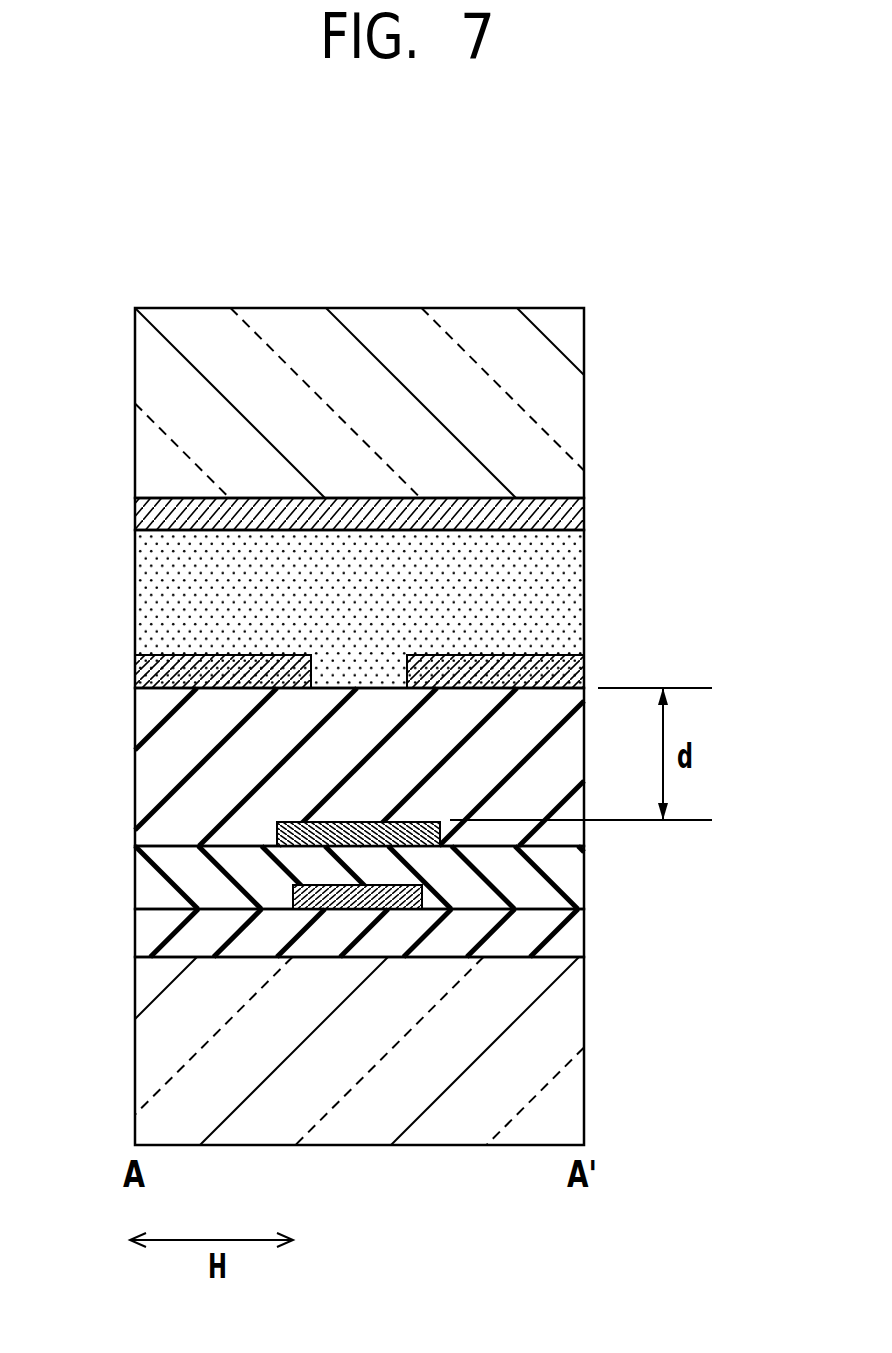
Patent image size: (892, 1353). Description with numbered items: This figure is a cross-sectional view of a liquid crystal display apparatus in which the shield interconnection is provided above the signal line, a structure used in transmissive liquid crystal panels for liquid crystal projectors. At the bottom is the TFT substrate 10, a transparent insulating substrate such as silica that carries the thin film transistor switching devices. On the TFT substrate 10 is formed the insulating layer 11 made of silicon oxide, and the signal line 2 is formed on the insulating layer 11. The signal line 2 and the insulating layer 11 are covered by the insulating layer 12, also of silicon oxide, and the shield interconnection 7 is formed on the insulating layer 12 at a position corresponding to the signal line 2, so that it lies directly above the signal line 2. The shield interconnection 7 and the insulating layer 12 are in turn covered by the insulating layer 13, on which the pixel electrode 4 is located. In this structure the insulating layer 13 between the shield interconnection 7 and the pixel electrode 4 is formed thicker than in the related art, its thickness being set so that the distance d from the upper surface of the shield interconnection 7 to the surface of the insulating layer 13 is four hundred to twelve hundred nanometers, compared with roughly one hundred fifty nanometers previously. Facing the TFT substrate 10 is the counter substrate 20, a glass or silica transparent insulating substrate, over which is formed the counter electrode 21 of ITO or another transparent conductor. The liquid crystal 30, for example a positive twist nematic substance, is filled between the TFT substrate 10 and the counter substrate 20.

The counter substrate 20 is at (578, 394).
The counter electrode 21 is at (578, 511).
The liquid crystal 30 is at (140, 604).
The pixel electrode 4 is at (140, 668).
The insulating layer 13 is at (148, 766).
The shield interconnection 7 is at (410, 821).
The insulating layer 12 is at (148, 878).
The signal line 2 is at (422, 887).
The insulating layer 11 is at (148, 937).
The TFT substrate 10 is at (570, 1040).